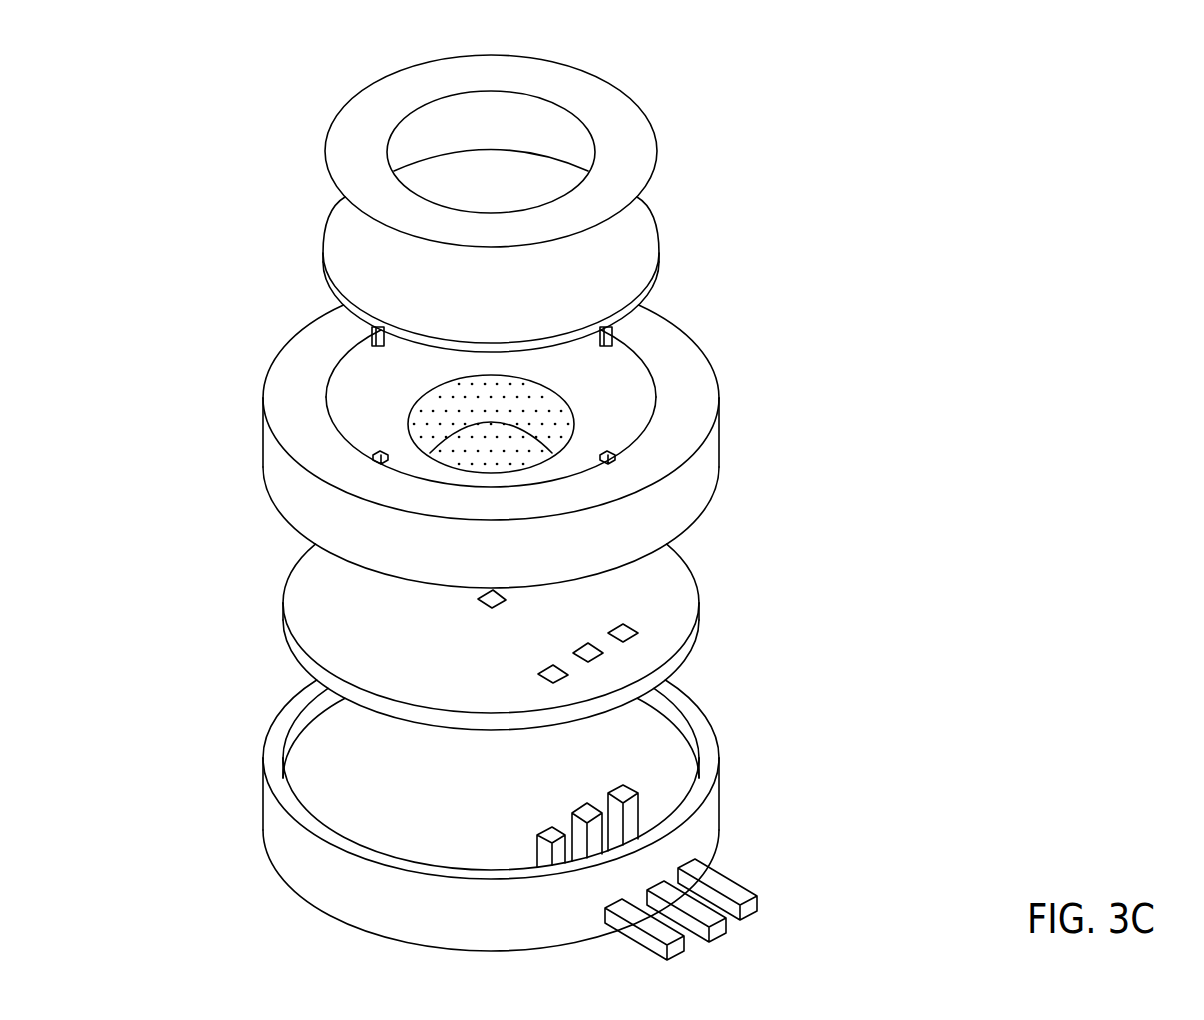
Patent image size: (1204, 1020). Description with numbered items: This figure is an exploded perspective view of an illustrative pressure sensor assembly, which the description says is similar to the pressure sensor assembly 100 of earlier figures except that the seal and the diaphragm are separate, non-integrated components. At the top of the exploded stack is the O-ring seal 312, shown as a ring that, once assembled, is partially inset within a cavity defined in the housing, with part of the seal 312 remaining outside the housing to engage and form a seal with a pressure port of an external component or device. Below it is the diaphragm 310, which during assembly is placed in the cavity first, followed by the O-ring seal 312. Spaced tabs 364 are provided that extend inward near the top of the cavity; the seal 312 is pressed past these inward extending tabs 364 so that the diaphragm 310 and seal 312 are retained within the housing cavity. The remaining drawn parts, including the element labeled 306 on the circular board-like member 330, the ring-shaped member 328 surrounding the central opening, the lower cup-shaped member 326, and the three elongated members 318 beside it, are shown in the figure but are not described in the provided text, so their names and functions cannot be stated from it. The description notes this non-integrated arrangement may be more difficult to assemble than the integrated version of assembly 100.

The pressure sensor assembly 100 is at (838, 149).
The sensor / electrical contact on circuit board 306 is at (505, 601).
The diaphragm 310 is at (337, 243).
The O-ring seal 312 is at (605, 117).
The elongated members / battery contacts 318 is at (710, 932).
The bottom housing / cup 326 is at (312, 878).
The ring housing with mesh opening 328 is at (270, 443).
The circuit board / disc 330 is at (298, 593).
The tabs 364 is at (372, 341).